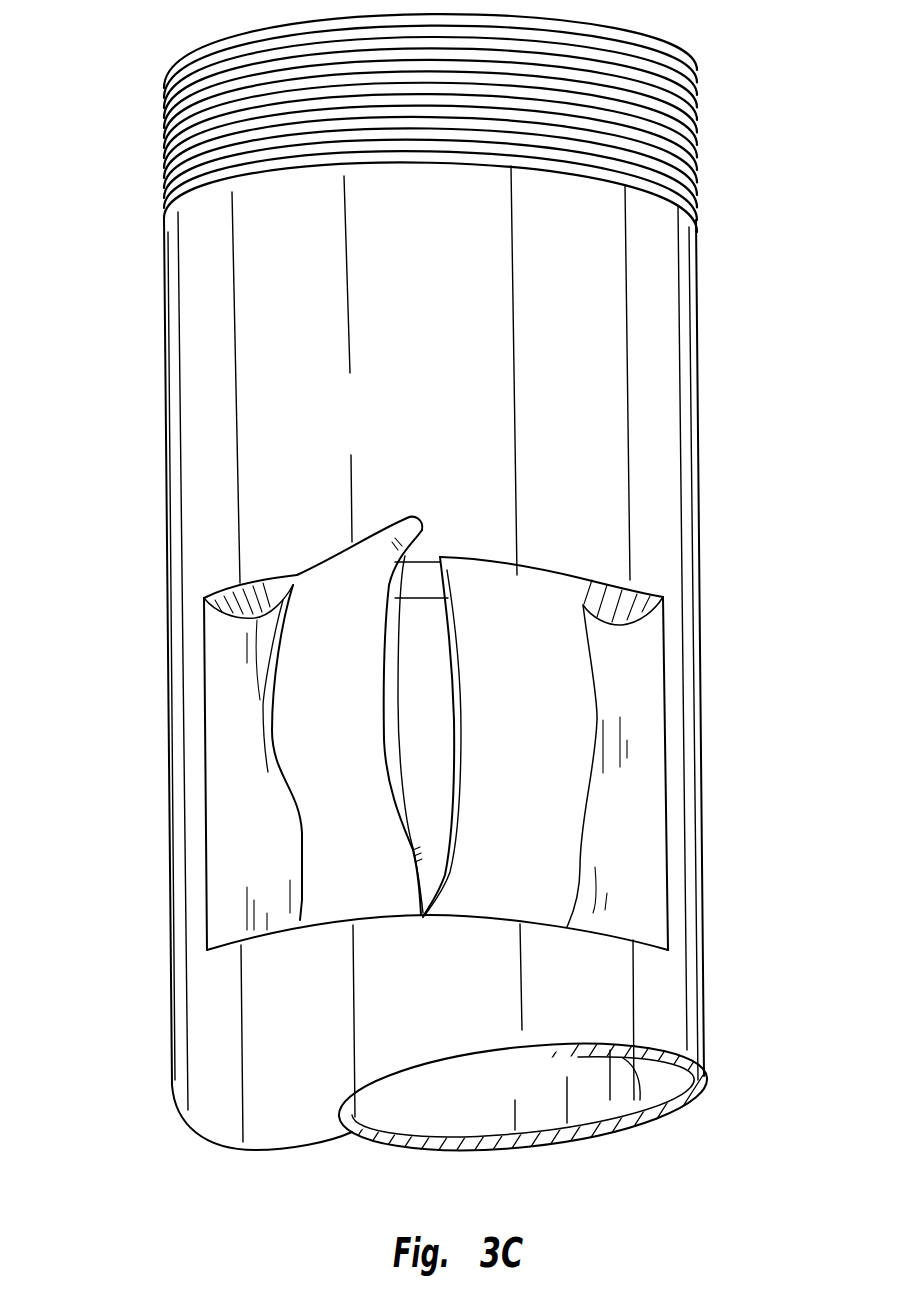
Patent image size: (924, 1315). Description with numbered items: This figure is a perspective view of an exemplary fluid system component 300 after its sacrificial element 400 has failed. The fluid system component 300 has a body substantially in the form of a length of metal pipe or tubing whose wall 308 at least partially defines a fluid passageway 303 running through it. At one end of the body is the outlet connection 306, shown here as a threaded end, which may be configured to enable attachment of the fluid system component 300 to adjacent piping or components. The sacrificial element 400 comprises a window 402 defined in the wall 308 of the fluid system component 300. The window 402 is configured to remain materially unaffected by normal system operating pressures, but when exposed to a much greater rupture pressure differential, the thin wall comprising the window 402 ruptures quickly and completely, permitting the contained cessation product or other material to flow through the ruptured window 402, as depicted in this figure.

The fluid system component 300 is at (128, 456).
The fluid passageway 303 is at (425, 648).
The outlet connection 306 is at (187, 52).
The wall 308 is at (667, 1103).
The sacrificial element 400 is at (228, 838).
The window 402 is at (307, 708).